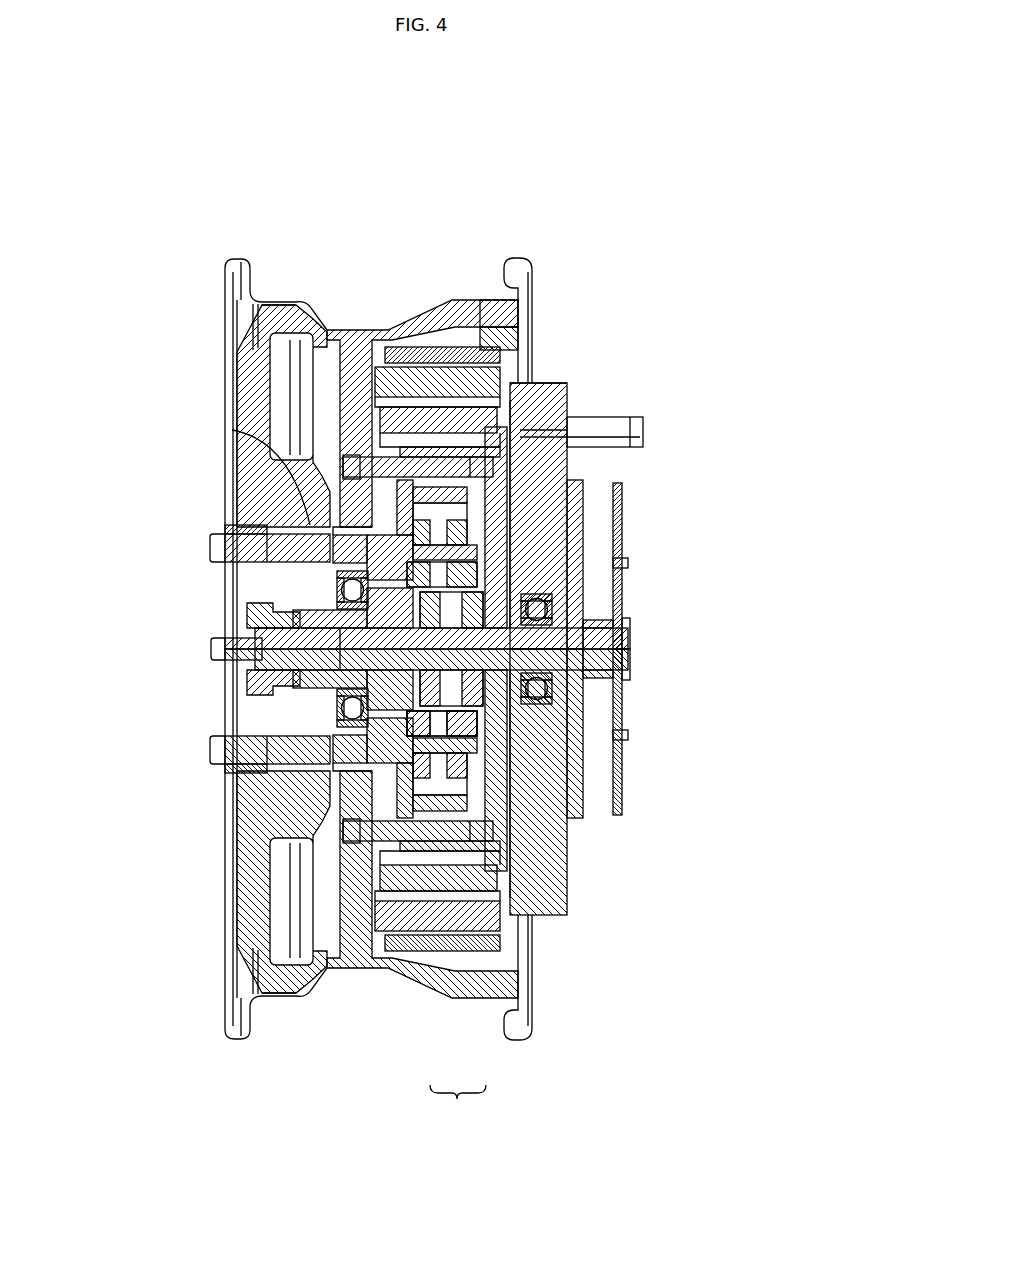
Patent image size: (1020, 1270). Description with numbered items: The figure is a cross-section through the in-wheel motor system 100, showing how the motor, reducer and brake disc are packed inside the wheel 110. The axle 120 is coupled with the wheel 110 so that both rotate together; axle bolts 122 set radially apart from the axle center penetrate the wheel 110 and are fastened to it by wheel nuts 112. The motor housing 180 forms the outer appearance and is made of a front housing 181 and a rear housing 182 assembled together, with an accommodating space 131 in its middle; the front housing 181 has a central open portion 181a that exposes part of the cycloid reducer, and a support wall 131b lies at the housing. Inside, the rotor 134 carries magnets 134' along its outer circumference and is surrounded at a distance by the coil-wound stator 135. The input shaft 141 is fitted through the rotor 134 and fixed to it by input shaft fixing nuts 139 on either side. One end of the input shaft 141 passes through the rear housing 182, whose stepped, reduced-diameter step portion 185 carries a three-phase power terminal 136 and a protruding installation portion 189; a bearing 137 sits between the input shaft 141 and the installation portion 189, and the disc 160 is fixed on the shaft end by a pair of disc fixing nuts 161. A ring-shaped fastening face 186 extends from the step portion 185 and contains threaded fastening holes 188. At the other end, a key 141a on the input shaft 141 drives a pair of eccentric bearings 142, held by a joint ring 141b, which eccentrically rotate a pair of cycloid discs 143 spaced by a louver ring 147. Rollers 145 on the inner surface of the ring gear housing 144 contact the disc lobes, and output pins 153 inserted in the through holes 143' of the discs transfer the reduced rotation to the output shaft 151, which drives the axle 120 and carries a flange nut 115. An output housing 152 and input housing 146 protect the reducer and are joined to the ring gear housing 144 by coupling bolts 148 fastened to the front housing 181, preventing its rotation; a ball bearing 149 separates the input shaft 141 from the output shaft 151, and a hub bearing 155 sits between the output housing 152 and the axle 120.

The in-wheel motor system 100 is at (662, 182).
The wheel 110 is at (243, 350).
The wheel nut 112 is at (225, 528).
The flange nut 115 is at (267, 675).
The axle 120 is at (277, 605).
The axle bolt 122 is at (225, 550).
The accommodating space 131 is at (425, 440).
The stator support wall 131b is at (492, 330).
The rotor 134 is at (422, 409).
The magnet 134' is at (438, 411).
The stator 135 is at (440, 360).
The three-phase power terminal 136 is at (606, 423).
The bearing 137 is at (560, 692).
The input shaft fixing nut 139 is at (513, 693).
The input shaft 141 is at (632, 652).
The key 141a is at (627, 594).
The joint ring 141b is at (315, 705).
The eccentric bearing 142 is at (600, 612).
The cycloid disc 143 is at (481, 819).
The through hole 143' is at (520, 806).
The ring gear housing 144 is at (395, 967).
The roller 145 is at (550, 400).
The input housing 146 is at (550, 484).
The louver ring 147 is at (628, 562).
The coupling bolt 148 is at (530, 437).
The ball bearing 149 is at (340, 588).
The output shaft 151 is at (257, 645).
The output housing 152 is at (262, 846).
The output pin 153 is at (300, 492).
The hub bearing 155 is at (223, 762).
The disc 160 is at (623, 777).
The disc fixing nut 161 is at (630, 664).
The motor housing 180 is at (458, 1104).
The front housing 181 is at (415, 962).
The open portion 181a is at (300, 462).
The rear housing 182 is at (497, 1005).
The step portion 185 is at (535, 383).
The fastening face 186 is at (520, 365).
The fastening hole 188 is at (520, 345).
The installation portion 189 is at (577, 507).